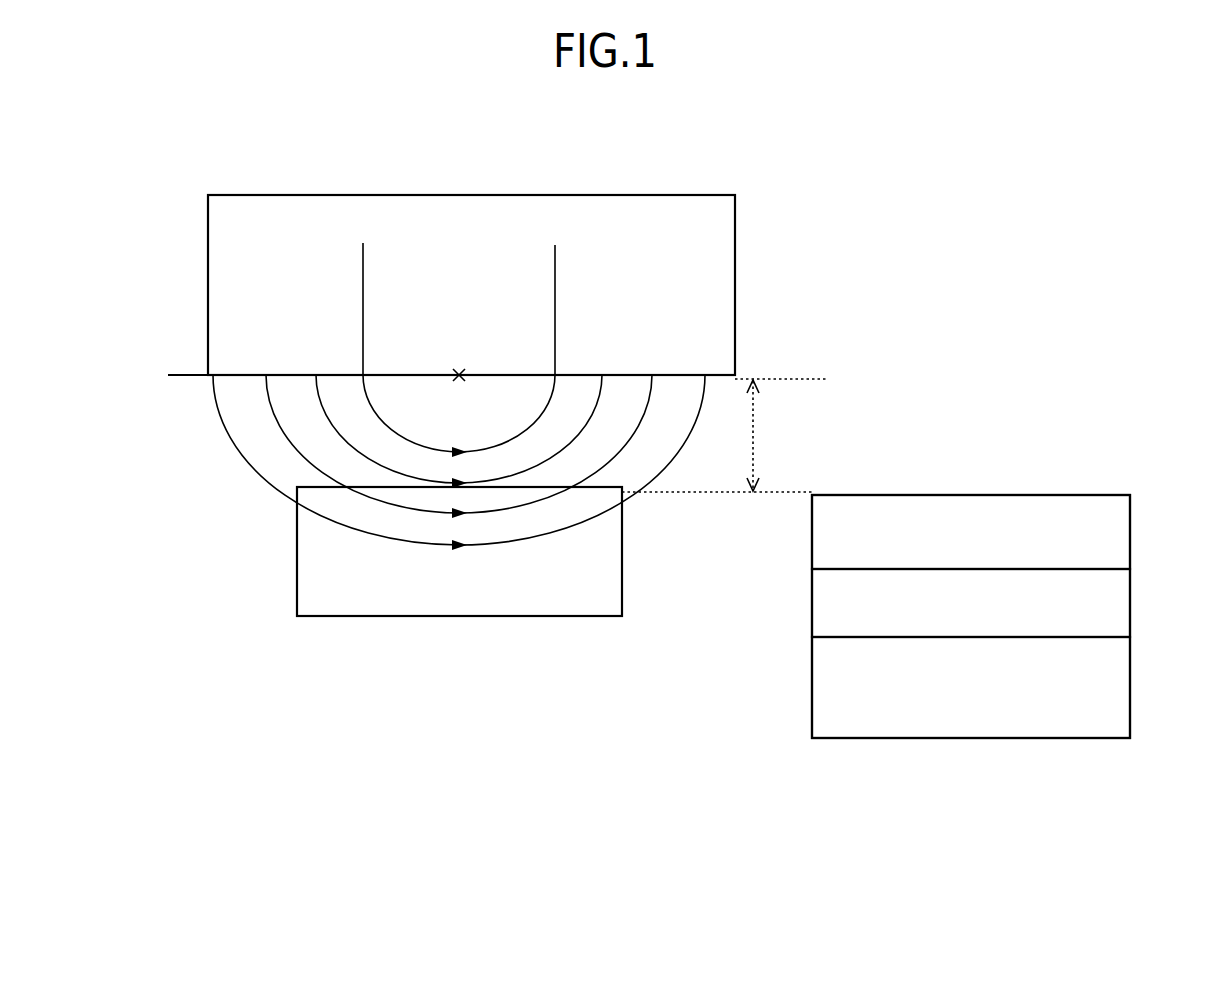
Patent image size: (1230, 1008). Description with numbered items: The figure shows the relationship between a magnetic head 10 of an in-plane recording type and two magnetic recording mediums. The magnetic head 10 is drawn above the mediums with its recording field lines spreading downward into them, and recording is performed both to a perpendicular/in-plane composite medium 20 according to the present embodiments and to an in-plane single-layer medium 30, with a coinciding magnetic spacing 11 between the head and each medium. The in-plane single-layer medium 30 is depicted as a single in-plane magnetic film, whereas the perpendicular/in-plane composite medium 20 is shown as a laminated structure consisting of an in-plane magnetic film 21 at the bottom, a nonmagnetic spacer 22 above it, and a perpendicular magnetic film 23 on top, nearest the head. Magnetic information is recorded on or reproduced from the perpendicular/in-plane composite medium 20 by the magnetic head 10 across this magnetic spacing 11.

The magnetic head 10 is at (735, 228).
The magnetic spacing 11 is at (867, 435).
The perpendicular/in-plane composite medium 20 is at (845, 639).
The in-plane magnetic film 21 is at (1130, 672).
The nonmagnetic spacer 22 is at (1130, 597).
The perpendicular magnetic film 23 is at (1130, 518).
The in-plane single-layer medium 30 is at (297, 547).